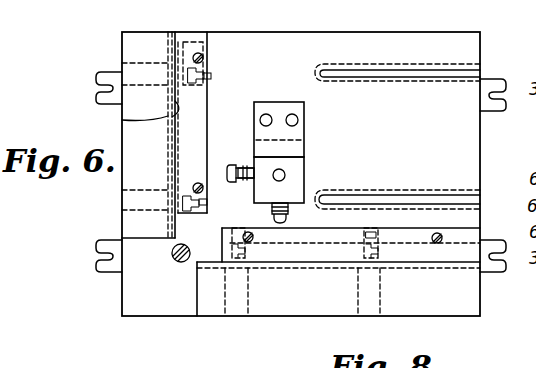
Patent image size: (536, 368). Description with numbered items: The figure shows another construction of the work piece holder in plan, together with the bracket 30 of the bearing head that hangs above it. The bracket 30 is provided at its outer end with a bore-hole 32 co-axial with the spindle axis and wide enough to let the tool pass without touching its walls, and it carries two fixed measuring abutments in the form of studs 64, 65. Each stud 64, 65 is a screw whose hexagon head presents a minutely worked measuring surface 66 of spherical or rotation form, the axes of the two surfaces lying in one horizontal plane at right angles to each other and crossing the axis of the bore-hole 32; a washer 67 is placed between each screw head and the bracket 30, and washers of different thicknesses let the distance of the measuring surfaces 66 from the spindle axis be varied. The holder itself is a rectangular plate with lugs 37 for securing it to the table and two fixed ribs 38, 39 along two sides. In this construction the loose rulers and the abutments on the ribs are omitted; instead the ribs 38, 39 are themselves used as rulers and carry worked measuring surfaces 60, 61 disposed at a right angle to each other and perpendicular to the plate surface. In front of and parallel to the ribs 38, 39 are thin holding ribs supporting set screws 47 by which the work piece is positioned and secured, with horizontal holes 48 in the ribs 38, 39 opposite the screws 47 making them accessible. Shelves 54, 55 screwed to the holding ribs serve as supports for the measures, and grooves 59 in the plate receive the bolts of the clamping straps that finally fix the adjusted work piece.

The bracket 30 is at (295, 148).
The bore-hole 32 is at (286, 175).
The lugs 37 is at (96, 76).
The rib 38 is at (128, 226).
The rib 39 is at (280, 302).
The set screws 47 is at (183, 42).
The horizontal holes 48 is at (121, 214).
The shelf 54 is at (190, 151).
The shelf 55 is at (428, 255).
The grooves 59 is at (470, 75).
The measuring surface 60 is at (122, 120).
The measuring surface 61 is at (324, 258).
The stud 64 is at (240, 168).
The stud 65 is at (287, 210).
The measuring surface 66 is at (229, 172).
The washer 67 is at (306, 185).